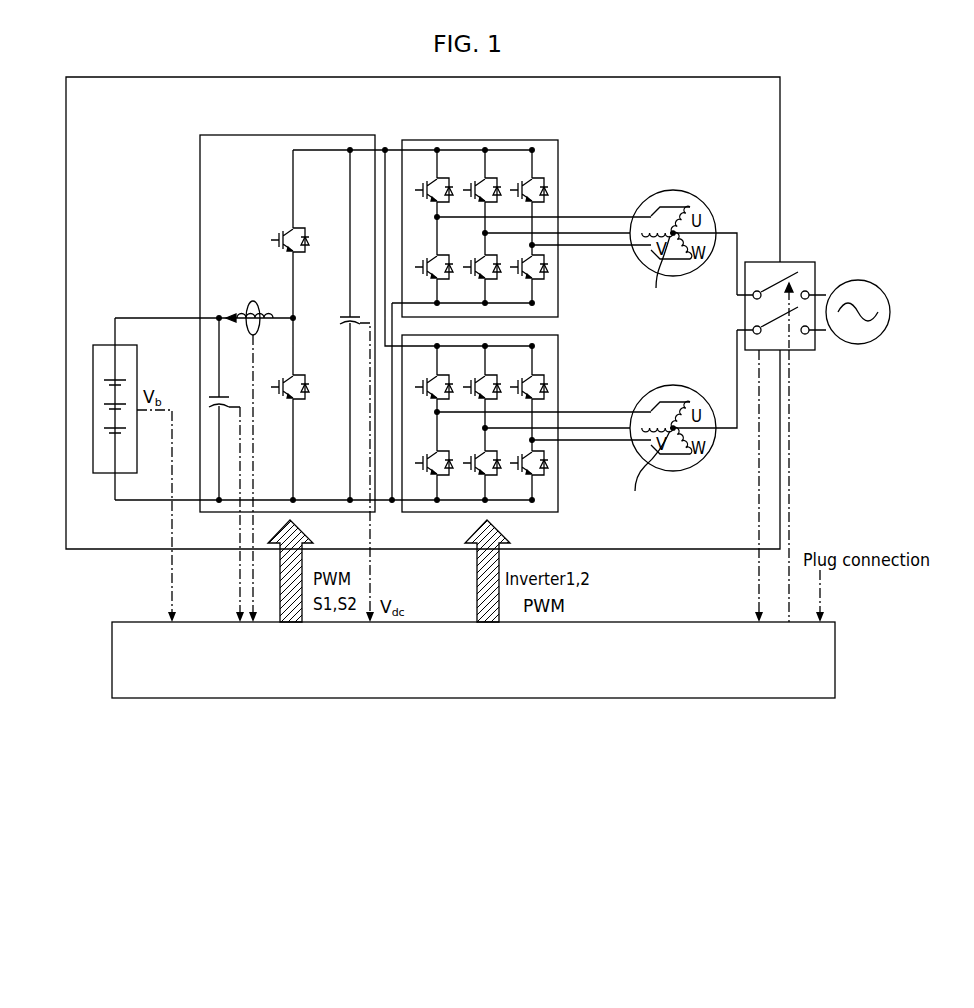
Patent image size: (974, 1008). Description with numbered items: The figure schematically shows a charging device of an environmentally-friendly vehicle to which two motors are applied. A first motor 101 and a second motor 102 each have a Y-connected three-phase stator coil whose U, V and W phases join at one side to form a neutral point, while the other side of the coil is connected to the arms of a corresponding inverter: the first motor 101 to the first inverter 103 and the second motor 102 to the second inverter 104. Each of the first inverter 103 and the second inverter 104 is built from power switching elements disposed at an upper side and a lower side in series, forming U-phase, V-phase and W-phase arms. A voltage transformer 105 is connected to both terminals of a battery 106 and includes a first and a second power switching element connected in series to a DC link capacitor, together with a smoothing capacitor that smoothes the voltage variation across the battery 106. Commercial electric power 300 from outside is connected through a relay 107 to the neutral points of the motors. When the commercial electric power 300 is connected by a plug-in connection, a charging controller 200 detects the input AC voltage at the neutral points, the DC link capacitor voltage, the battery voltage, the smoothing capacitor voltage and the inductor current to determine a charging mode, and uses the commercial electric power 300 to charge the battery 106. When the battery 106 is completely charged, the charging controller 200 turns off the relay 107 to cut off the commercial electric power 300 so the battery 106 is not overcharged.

The first motor 101 is at (670, 191).
The second motor 102 is at (672, 471).
The first inverter 103 is at (474, 139).
The second inverter 104 is at (428, 512).
The voltage transformer 105 is at (271, 135).
The battery 106 is at (100, 345).
The relay 107 is at (800, 351).
The charging controller 200 is at (835, 658).
The commercial electric power 300 is at (857, 280).